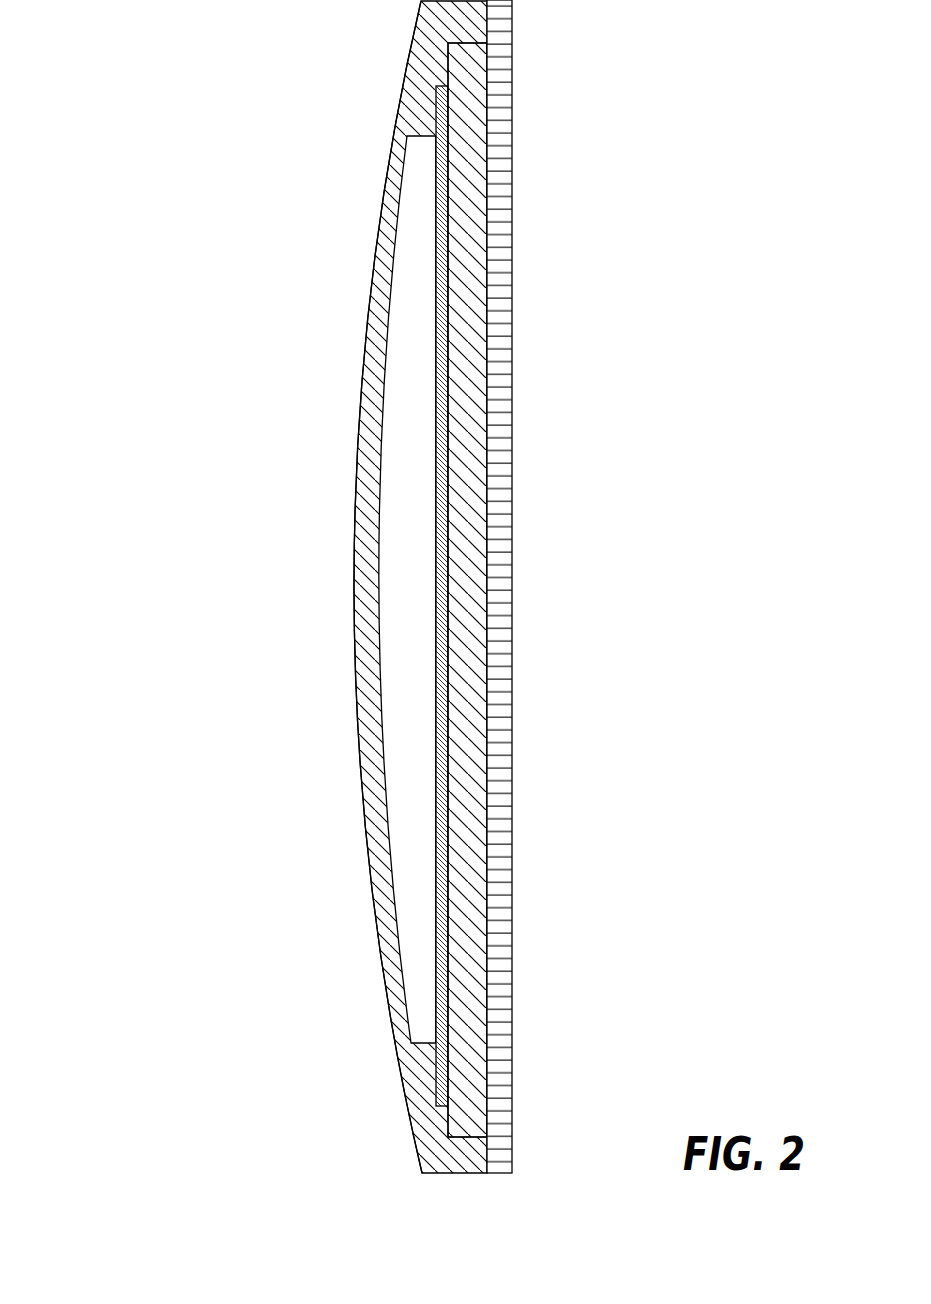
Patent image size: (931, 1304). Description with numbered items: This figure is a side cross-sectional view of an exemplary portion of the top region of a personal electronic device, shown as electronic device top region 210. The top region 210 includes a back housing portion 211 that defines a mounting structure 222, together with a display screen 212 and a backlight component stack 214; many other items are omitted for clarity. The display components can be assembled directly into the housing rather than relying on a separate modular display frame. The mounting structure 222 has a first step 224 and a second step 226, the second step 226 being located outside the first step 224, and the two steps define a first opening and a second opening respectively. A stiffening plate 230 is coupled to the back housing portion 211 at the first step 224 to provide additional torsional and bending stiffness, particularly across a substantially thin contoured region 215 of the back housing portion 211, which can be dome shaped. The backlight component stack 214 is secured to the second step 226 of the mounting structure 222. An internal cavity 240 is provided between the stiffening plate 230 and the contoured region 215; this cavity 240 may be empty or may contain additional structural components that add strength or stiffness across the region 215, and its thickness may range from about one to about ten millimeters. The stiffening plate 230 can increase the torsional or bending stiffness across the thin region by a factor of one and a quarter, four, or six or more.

The electronic device top region 210 is at (208, 78).
The back housing portion 211 is at (398, 1081).
The display screen 212 is at (498, 930).
The backlight component stack 214 is at (472, 1009).
The contoured region 215 is at (360, 772).
The mounting structure 222 is at (580, 587).
The first step 224 is at (436, 118).
The second step 226 is at (448, 67).
The stiffening plate 230 is at (437, 902).
The internal cavity 240 is at (426, 551).